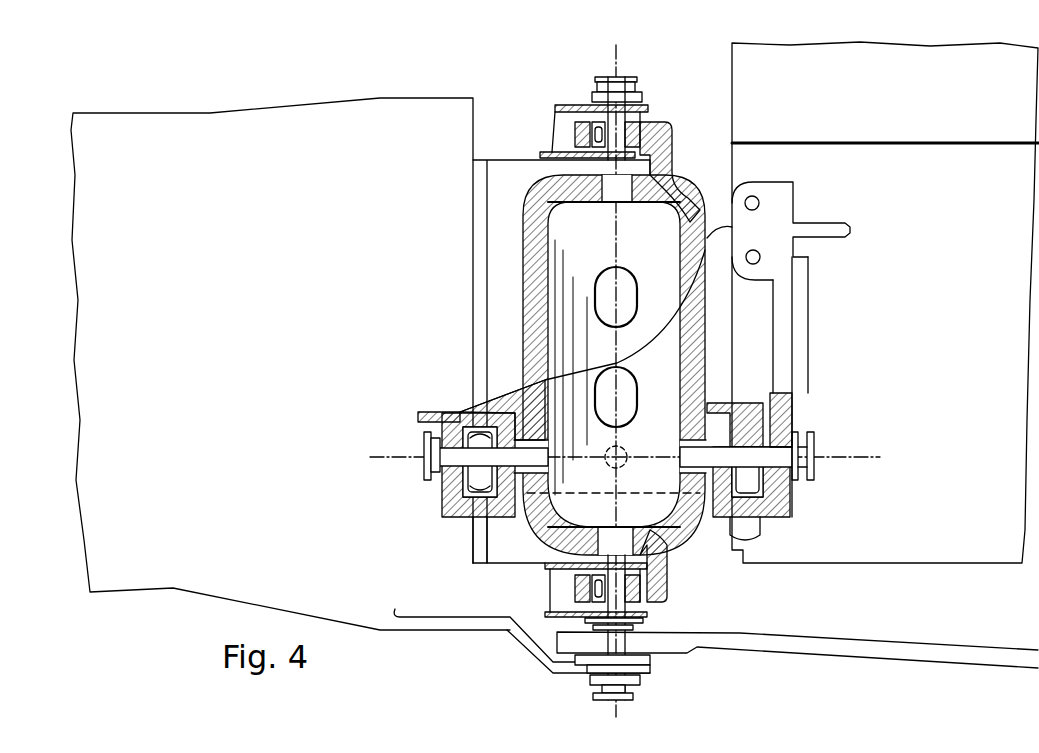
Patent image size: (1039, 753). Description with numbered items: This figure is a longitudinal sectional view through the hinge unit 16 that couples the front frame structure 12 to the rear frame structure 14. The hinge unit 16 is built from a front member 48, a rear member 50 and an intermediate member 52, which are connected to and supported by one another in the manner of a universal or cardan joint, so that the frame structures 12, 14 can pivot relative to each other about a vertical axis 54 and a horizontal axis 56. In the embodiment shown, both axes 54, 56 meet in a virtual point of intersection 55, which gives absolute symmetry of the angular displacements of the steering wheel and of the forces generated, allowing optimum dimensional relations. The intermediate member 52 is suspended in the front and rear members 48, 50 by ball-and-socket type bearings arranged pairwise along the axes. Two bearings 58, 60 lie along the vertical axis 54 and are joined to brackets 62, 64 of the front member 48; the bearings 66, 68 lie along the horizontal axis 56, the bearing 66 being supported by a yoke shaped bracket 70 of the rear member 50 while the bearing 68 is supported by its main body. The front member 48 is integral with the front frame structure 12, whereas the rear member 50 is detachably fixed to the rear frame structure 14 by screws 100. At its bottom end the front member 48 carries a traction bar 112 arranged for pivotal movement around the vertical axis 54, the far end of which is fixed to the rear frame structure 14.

The front frame structure 12 is at (175, 411).
The rear frame structure 14 is at (977, 405).
The hinge unit 16 is at (686, 83).
The front member 48 is at (480, 338).
The rear member 50 is at (763, 320).
The intermediate member 52 is at (548, 210).
The vertical axis 54 is at (612, 47).
The virtual point of intersection 55 is at (604, 450).
The horizontal axis 56 is at (840, 457).
The bearing 58 is at (627, 128).
The bearing 60 is at (668, 594).
The bracket 62 is at (516, 115).
The bracket 64 is at (485, 625).
The bearing 66 is at (470, 520).
The bearing 68 is at (782, 493).
The yoke shaped bracket 70 is at (460, 410).
The screws 100 is at (752, 196).
The traction bar 112 is at (983, 650).